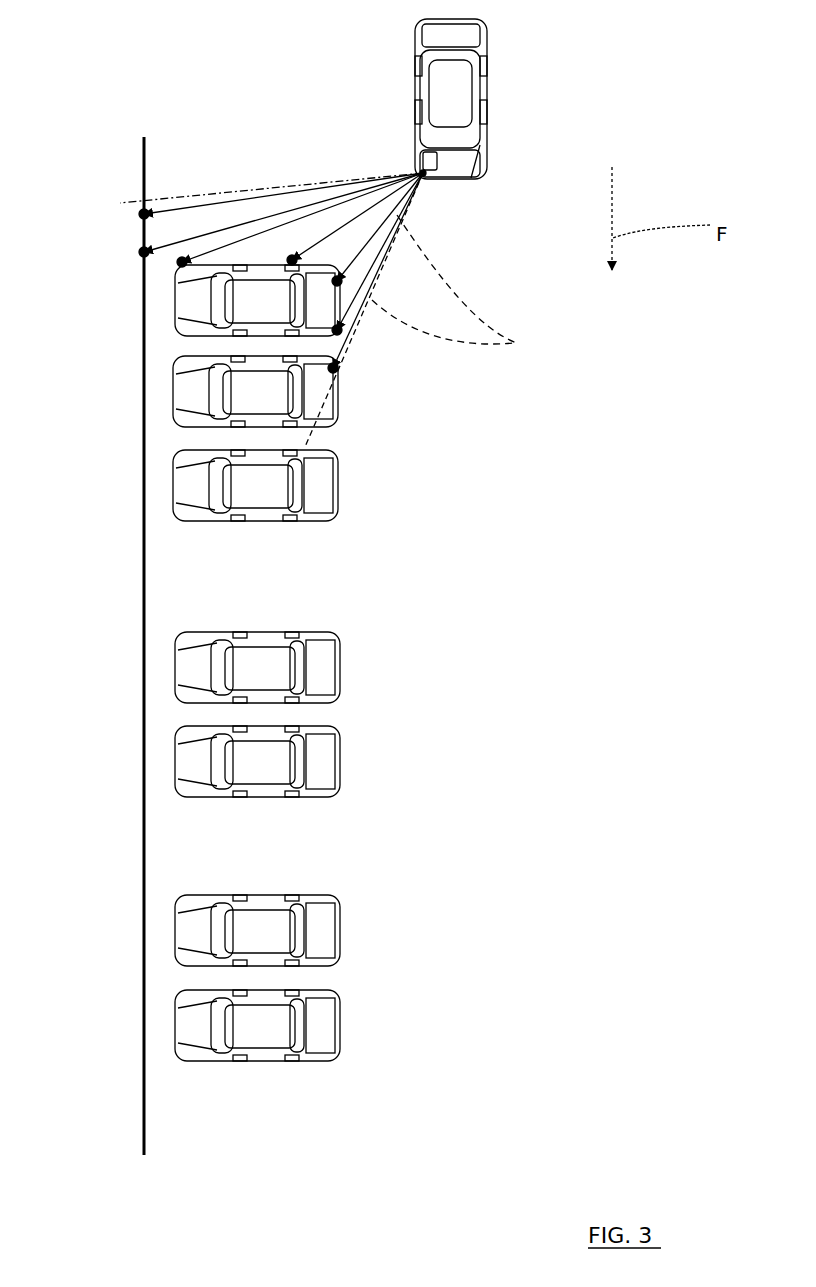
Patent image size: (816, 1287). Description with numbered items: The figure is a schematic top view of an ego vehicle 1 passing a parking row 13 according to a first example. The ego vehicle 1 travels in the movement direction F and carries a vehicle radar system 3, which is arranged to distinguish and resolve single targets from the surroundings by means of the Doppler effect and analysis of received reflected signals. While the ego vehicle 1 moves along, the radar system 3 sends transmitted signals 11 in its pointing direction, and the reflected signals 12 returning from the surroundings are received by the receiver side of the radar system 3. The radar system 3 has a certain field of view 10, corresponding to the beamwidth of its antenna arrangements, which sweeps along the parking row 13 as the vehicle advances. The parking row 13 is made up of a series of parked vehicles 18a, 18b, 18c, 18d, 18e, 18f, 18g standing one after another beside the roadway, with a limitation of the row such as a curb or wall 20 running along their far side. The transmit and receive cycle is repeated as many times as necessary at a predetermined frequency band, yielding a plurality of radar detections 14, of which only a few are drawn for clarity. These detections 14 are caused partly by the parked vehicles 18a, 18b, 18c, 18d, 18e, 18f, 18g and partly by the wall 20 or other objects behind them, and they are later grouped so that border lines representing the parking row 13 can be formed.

The ego vehicle 1 is at (455, 97).
The vehicle radar system 3 is at (433, 178).
The field of view 10 is at (457, 343).
The transmitted signals 11 is at (271, 245).
The reflected signals 12 is at (348, 245).
The parking row 13 is at (287, 1082).
The radar detections 14 is at (292, 262).
The parked vehicle 18a is at (240, 313).
The parked vehicle 18b is at (238, 404).
The parked vehicle 18c is at (238, 498).
The parked vehicle 18d is at (240, 680).
The parked vehicle 18e is at (240, 774).
The parked vehicle 18f is at (240, 943).
The parked vehicle 18g is at (240, 1038).
The wall 20 is at (143, 625).